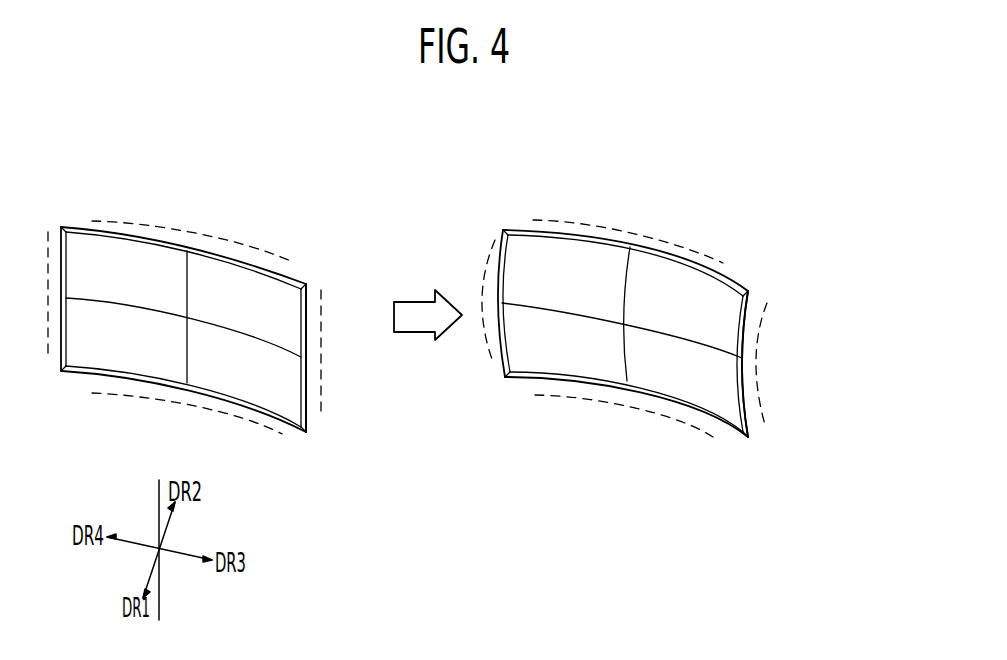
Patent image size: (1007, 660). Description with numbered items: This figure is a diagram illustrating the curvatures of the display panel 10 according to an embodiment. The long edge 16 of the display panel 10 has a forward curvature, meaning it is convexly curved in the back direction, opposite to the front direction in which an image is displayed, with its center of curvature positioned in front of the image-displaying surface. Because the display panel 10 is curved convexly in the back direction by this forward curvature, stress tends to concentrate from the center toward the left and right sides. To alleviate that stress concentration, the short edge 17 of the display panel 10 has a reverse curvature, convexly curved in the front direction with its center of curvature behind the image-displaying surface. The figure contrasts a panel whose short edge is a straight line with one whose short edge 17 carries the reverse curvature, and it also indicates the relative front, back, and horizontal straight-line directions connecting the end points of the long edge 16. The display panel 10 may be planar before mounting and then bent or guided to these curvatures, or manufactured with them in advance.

The display panel 10 is at (330, 217).
The long edge 16 is at (253, 258).
The short edge 17 is at (307, 407).